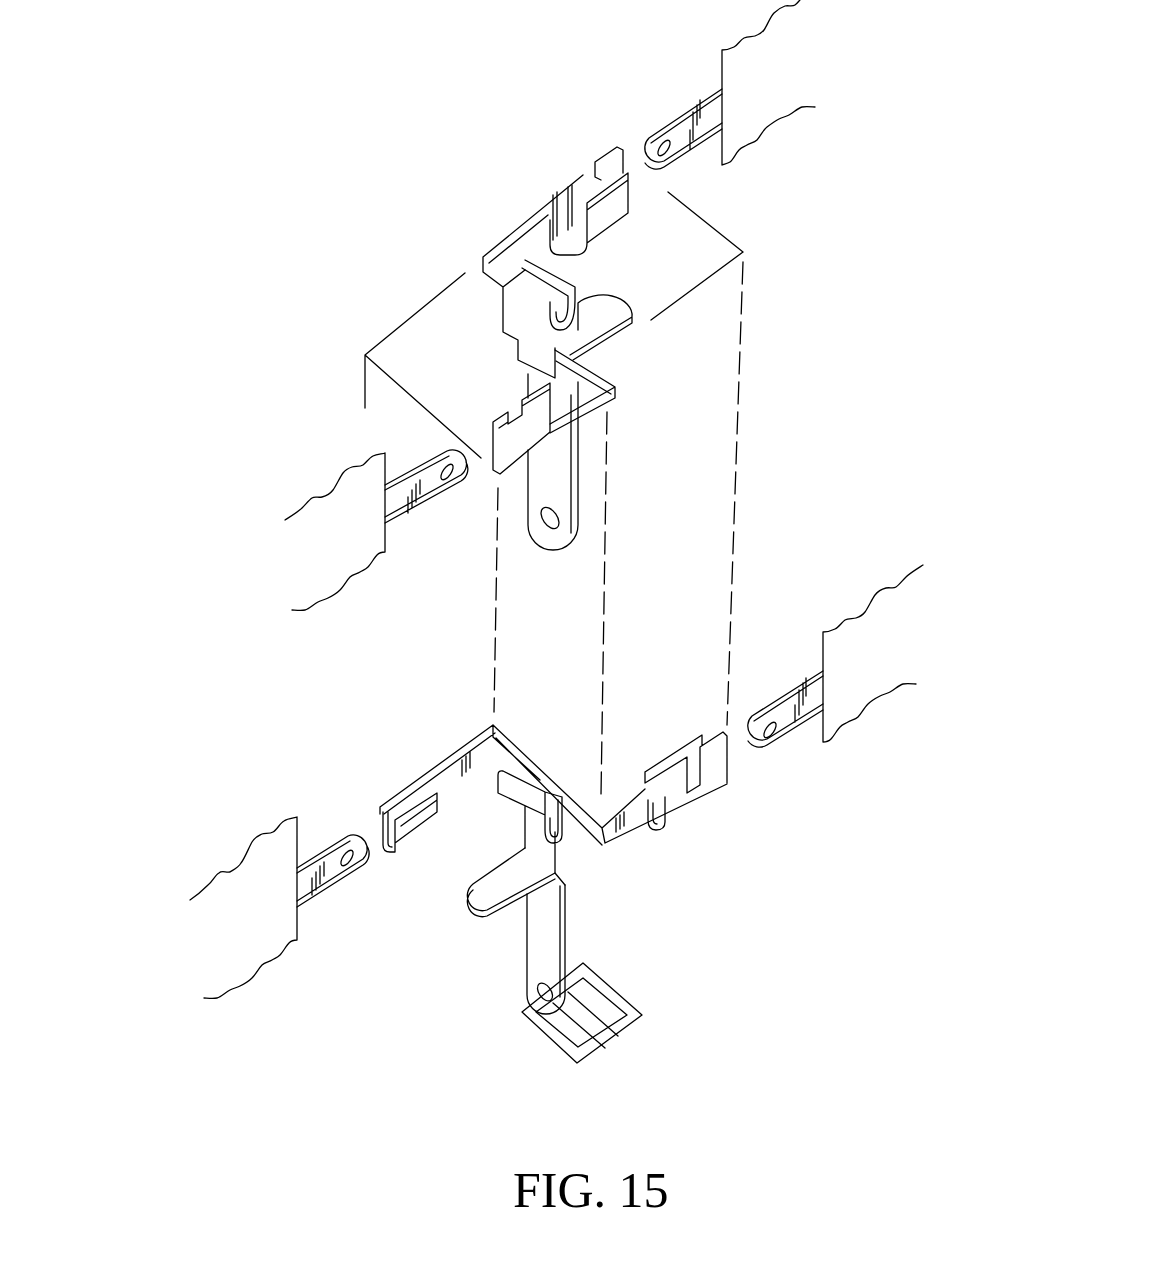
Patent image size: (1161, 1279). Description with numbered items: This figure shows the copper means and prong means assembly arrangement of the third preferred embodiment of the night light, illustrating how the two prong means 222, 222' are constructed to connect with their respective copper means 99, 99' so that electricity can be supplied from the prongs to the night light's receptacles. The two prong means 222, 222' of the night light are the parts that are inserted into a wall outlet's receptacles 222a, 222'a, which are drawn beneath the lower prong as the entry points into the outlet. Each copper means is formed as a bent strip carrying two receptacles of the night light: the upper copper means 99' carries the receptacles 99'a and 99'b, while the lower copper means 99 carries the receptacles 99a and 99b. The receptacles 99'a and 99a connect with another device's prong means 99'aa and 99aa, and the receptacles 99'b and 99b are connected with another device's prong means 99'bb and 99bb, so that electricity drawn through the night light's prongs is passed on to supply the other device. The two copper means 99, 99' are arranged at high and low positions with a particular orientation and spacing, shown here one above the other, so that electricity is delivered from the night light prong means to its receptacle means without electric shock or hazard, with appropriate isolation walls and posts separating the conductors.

The copper means 99' is at (549, 266).
The receptacle of night light 99'a is at (589, 160).
The other device's prong means 99'aa is at (734, 110).
The receptacle of night light 99'b is at (465, 361).
The other device's prong means 99'bb is at (372, 500).
The prong means 222' is at (615, 462).
The copper means 99 is at (552, 776).
The receptacle of night light 99a is at (717, 790).
The other device's prong means 99aa is at (778, 698).
The receptacle of night light 99b is at (417, 843).
The other device's prong means 99bb is at (323, 847).
The prong means 222 is at (578, 892).
The wall outlet receptacle 222a is at (565, 1033).
The wall outlet receptacle 222'a is at (644, 1013).